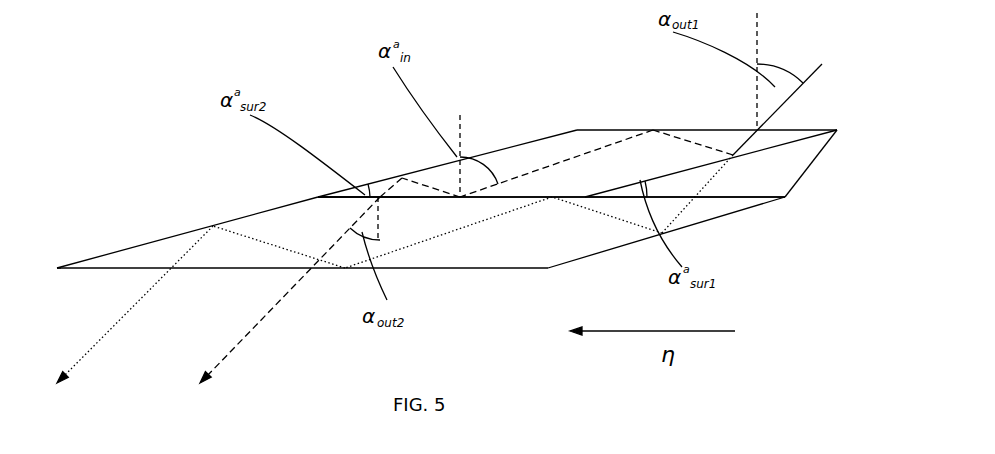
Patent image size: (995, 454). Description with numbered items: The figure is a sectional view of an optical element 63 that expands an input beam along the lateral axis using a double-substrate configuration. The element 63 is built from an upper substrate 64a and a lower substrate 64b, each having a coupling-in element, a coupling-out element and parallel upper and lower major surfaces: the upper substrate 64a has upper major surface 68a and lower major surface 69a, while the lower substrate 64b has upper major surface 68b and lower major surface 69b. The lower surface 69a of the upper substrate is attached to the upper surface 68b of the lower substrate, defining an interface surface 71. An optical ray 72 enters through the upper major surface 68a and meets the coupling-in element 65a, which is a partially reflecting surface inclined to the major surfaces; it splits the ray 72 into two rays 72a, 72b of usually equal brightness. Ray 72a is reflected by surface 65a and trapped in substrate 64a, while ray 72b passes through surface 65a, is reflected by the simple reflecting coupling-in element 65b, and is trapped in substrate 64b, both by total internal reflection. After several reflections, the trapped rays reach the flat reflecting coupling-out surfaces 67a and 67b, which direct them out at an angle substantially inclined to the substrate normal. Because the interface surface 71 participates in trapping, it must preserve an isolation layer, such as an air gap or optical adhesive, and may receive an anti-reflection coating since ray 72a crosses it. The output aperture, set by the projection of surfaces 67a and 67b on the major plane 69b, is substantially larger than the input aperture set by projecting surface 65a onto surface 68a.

The optical element 63 is at (355, 141).
The upper substrate 64a is at (577, 119).
The lower substrate 64b is at (421, 251).
The coupling-in element of upper substrate 65a is at (678, 168).
The coupling-in element of lower substrate 65b is at (718, 215).
The coupling-out element of upper substrate 67a is at (477, 183).
The coupling-out element of lower substrate 67b is at (168, 237).
The upper major surface of upper substrate 68a is at (598, 131).
The upper major surface of lower substrate 68b is at (615, 200).
The lower major surface of upper substrate 69a is at (418, 195).
The lower major surface of lower substrate 69b is at (405, 270).
The interface surface 71 is at (320, 198).
The optical ray 72 is at (823, 62).
The first split ray 72a is at (232, 347).
The second split ray 72b is at (92, 347).